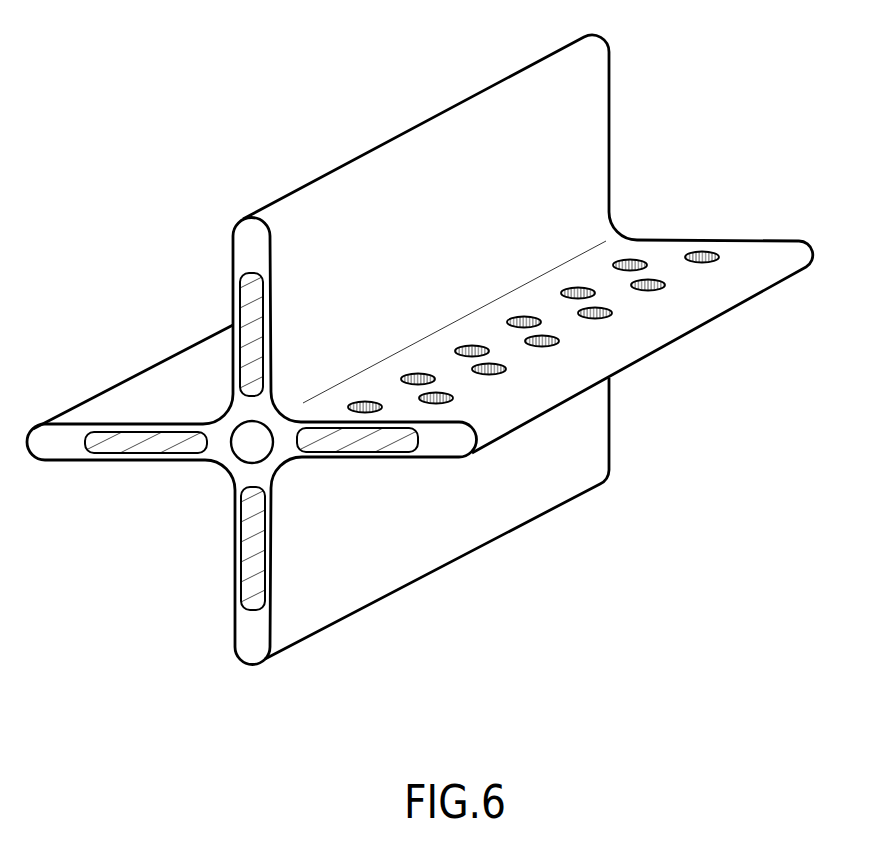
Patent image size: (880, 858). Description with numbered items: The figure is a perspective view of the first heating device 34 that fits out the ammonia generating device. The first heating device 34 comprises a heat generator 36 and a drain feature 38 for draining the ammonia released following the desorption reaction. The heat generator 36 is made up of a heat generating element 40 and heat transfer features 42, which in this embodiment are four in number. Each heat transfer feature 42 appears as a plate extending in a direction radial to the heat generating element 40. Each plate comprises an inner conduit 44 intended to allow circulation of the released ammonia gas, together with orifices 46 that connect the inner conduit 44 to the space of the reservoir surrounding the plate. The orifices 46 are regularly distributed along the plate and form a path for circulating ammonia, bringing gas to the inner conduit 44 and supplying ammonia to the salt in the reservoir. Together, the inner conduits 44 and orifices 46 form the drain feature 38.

The first heating device 34 is at (722, 109).
The heat generator 36 is at (580, 105).
The drain feature 38 is at (122, 445).
The heat generating element 40 is at (248, 448).
The heat transfer feature 42 is at (640, 348).
The inner conduit 44 is at (157, 440).
The orifices 46 is at (650, 278).